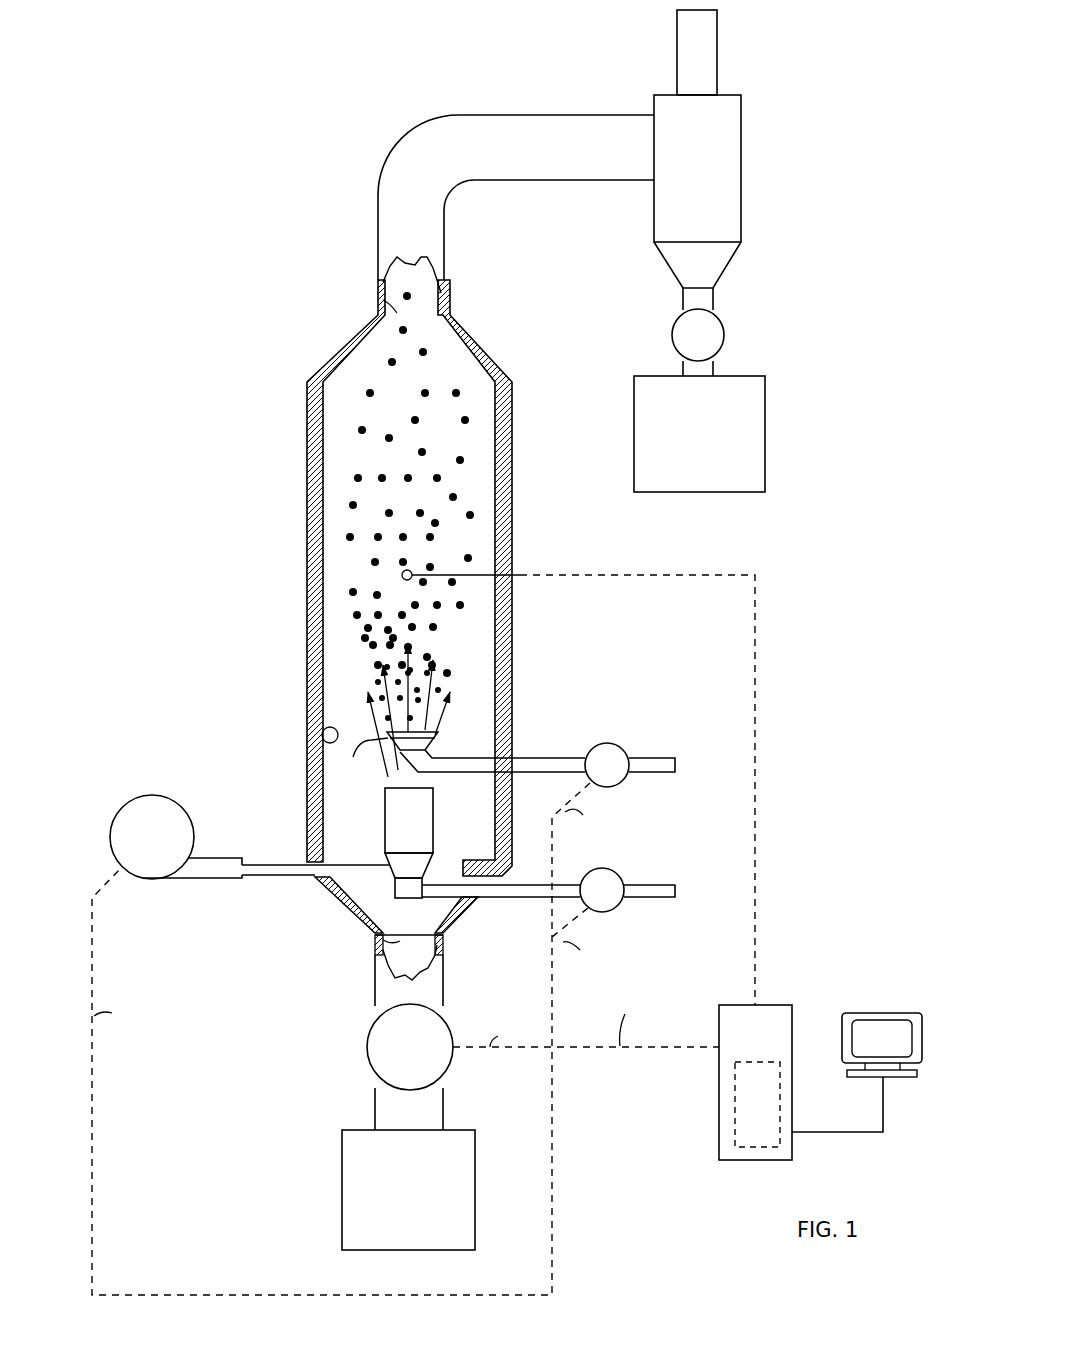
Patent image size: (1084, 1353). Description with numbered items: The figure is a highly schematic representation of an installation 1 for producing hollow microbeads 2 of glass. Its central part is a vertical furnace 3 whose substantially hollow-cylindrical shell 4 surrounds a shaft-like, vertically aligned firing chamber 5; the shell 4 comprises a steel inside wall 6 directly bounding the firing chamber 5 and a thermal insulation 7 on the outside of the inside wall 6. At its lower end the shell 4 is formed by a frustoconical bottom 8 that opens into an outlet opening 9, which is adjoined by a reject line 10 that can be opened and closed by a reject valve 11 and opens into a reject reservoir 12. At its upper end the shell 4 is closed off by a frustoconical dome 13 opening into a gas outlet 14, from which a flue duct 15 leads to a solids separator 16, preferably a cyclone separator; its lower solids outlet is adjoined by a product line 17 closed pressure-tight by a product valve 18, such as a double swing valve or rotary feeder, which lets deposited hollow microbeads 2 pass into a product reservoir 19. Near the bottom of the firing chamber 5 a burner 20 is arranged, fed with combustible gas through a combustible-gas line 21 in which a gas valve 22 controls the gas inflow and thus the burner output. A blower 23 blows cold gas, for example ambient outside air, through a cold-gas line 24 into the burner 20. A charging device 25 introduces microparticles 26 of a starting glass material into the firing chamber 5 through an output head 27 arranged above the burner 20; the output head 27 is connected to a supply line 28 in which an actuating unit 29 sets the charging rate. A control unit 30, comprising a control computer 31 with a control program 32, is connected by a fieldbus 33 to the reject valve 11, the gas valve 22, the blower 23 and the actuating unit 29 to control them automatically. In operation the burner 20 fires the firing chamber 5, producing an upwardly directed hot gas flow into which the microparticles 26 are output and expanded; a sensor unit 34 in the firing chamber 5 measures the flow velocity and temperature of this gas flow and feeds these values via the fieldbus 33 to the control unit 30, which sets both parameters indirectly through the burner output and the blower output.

The installation 1 is at (250, 106).
The hollow microbeads 2 is at (355, 477).
The vertical furnace 3 is at (371, 559).
The shell 4 is at (307, 684).
The firing chamber 5 is at (478, 478).
The inside wall 6 is at (305, 742).
The thermal insulation 7 is at (514, 393).
The bottom 8 is at (474, 910).
The outlet opening 9 is at (400, 945).
The reject line 10 is at (445, 986).
The reject valve 11 is at (393, 1044).
The reject reservoir 12 is at (342, 1200).
The dome 13 is at (468, 340).
The gas outlet 14 is at (378, 300).
The flue duct 15 is at (513, 112).
The solids separator 16 is at (742, 160).
The product line 17 is at (714, 306).
The product valve 18 is at (725, 334).
The product reservoir 19 is at (766, 452).
The burner 20 is at (433, 842).
The combustible-gas line 21 is at (646, 880).
The gas valve 22 is at (610, 913).
The blower 23 is at (138, 794).
The cold-gas line 24 is at (262, 880).
The charging device 25 is at (556, 722).
The microparticles 26 is at (446, 654).
The output head 27 is at (438, 748).
The supply line 28 is at (649, 756).
The actuating unit 29 is at (618, 787).
The control unit 30 is at (862, 952).
The control computer 31 is at (719, 1130).
The control program 32 is at (750, 1150).
The fieldbus 33 is at (757, 742).
The sensor unit 34 is at (418, 571).